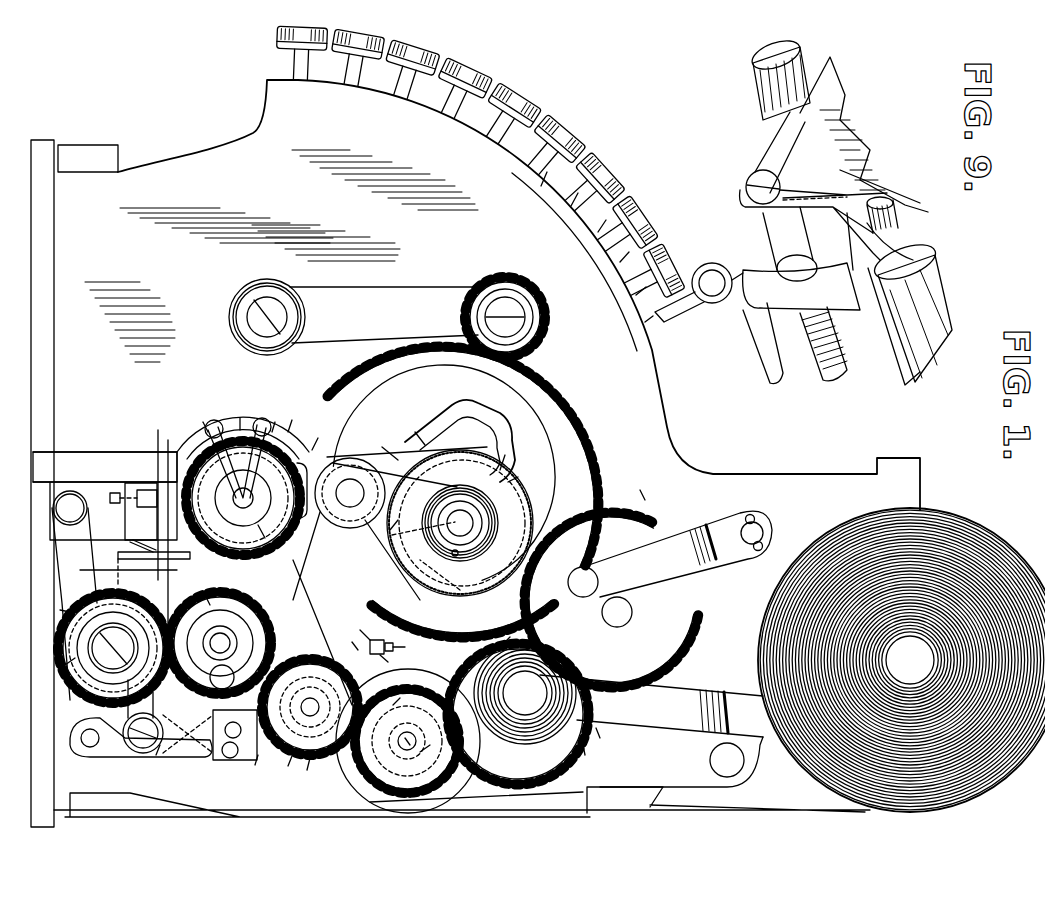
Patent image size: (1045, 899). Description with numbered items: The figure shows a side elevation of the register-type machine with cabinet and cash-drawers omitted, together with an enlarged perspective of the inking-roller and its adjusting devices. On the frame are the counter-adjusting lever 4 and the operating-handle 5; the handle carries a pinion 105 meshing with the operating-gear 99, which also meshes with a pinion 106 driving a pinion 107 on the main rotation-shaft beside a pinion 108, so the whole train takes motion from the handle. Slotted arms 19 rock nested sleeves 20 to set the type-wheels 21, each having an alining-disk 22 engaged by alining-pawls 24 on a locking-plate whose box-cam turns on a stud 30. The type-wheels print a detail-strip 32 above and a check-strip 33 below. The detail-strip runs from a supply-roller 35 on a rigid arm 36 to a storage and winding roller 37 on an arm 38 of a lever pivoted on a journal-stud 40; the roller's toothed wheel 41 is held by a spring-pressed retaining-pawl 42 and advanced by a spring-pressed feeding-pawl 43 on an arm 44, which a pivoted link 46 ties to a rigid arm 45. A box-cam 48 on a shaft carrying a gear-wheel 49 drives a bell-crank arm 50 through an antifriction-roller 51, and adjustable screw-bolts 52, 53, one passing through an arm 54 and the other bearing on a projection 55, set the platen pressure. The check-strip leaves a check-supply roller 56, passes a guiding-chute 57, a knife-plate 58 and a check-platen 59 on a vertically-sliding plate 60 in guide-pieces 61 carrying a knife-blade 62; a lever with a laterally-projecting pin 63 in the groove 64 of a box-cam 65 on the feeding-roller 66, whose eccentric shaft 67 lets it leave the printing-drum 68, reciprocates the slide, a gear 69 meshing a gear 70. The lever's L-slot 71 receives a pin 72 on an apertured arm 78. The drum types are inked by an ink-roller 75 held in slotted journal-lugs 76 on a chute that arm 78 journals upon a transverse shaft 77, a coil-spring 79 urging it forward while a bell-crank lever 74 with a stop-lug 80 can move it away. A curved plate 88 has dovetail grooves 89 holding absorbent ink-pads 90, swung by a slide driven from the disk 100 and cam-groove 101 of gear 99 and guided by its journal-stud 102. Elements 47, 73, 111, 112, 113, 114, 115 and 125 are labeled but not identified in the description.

In FIG. 1, the counter-adjusting lever 4 is at (475, 453).
In FIG. 1, the operating-handle 5 is at (354, 317).
In FIG. 1, the arms 19 is at (45, 535).
In FIG. 1, the nested sleeves 20 is at (88, 580).
In FIG. 1, the type-wheels 21 is at (330, 552).
In FIG. 1, the alining-disk 22 is at (255, 492).
In FIG. 1, the alining-pawls 24 is at (265, 538).
In FIG. 1, the stud 30 is at (390, 530).
In FIG. 1, the detail-strip 32 is at (868, 425).
In FIG. 1, the check-strip 33 is at (745, 772).
In FIG. 1, the supply-roller 35 is at (668, 525).
In FIG. 1, the rigid arm 36 is at (655, 695).
In FIG. 1, the storage and winding roller 37 is at (483, 522).
In FIG. 1, the arm 38 is at (430, 622).
In FIG. 1, the journal-stud 40 is at (540, 530).
In FIG. 1, the toothed wheel 41 is at (448, 412).
In FIG. 1, the spring-pressed retaining-pawl 42 is at (415, 432).
In FIG. 1, the spring-pressed feeding-pawl 43 is at (328, 770).
In FIG. 1, the arm 44 is at (348, 770).
In FIG. 1, the rigid arm 45 is at (518, 713).
In FIG. 1, the pivoted link 46 is at (255, 765).
In FIG. 1, the pin 47 is at (288, 766).
In FIG. 1, the box-cam 48 is at (307, 770).
In FIG. 1, the gear-wheel 49 is at (430, 745).
In FIG. 1, the bell-crank arm 50 is at (405, 738).
In FIG. 1, the antifriction-roller 51 is at (352, 642).
In FIG. 1, the adjustable screw-bolt 52 is at (400, 642).
In FIG. 1, the adjustable screw-bolt 53 is at (380, 655).
In FIG. 1, the arm 54 is at (393, 705).
In FIG. 1, the projection 55 is at (240, 418).
In FIG. 1, the check-supply roller 56 is at (901, 660).
In FIG. 1, the guiding-chute 57 is at (158, 452).
In FIG. 1, the knife-plate 58 is at (160, 445).
In FIG. 1, the check-platen 59 is at (203, 422).
In FIG. 1, the vertically-sliding plate 60 is at (110, 498).
In FIG. 1, the guide-pieces 61 is at (85, 755).
In FIG. 1, the knife-blade 62 is at (141, 533).
In FIG. 1, the laterally-projecting pin 63 is at (65, 665).
In FIG. 1, the groove 64 is at (135, 752).
In FIG. 1, the box-cam 65 is at (70, 698).
In FIG. 1, the feeding-roller 66 is at (156, 755).
In FIG. 1, the shaft 67 is at (225, 760).
In FIG. 1, the printing-drum 68 is at (185, 610).
In FIG. 1, the gear 69 is at (60, 610).
In FIG. 9, the gear 70 is at (758, 88).
In FIG. 9, the L-slot 71 is at (770, 150).
In FIG. 9, the pin 72 is at (792, 178).
In FIG. 9, the cylinder 73 is at (945, 305).
In FIG. 9, the bell-crank lever 74 is at (840, 305).
In FIG. 9, the ink-roller 75 is at (762, 345).
In FIG. 9, the slotted journal-lugs 76 is at (905, 235).
In FIG. 9, the transverse shaft 77 is at (768, 250).
In FIG. 9, the arm 78 is at (890, 372).
In FIG. 9, the coil-spring 79 is at (812, 350).
In FIG. 9, the stop-lug 80 is at (870, 182).
In FIG. 1, the curved plate 88 is at (275, 422).
In FIG. 1, the dovetail grooves 89 is at (292, 420).
In FIG. 1, the absorbent ink-pads 90 is at (318, 438).
In FIG. 1, the operating-gear 99 is at (472, 464).
In FIG. 1, the disk 100 is at (505, 455).
In FIG. 1, the cam-groove 101 is at (455, 555).
In FIG. 1, the journal-stud 102 is at (386, 493).
In FIG. 1, the pinion 105 is at (545, 318).
In FIG. 1, the pinion 106 is at (622, 640).
In FIG. 1, the pinion 107 is at (600, 738).
In FIG. 1, the pinion 108 is at (585, 755).
In FIG. 1, the pin 111 is at (510, 637).
In FIG. 1, the lever 112 is at (365, 548).
In FIG. 1, the pin 113 is at (382, 447).
In FIG. 1, the pin 114 is at (518, 477).
In FIG. 1, the pin 115 is at (205, 595).
In FIG. 1, the pin 125 is at (650, 506).